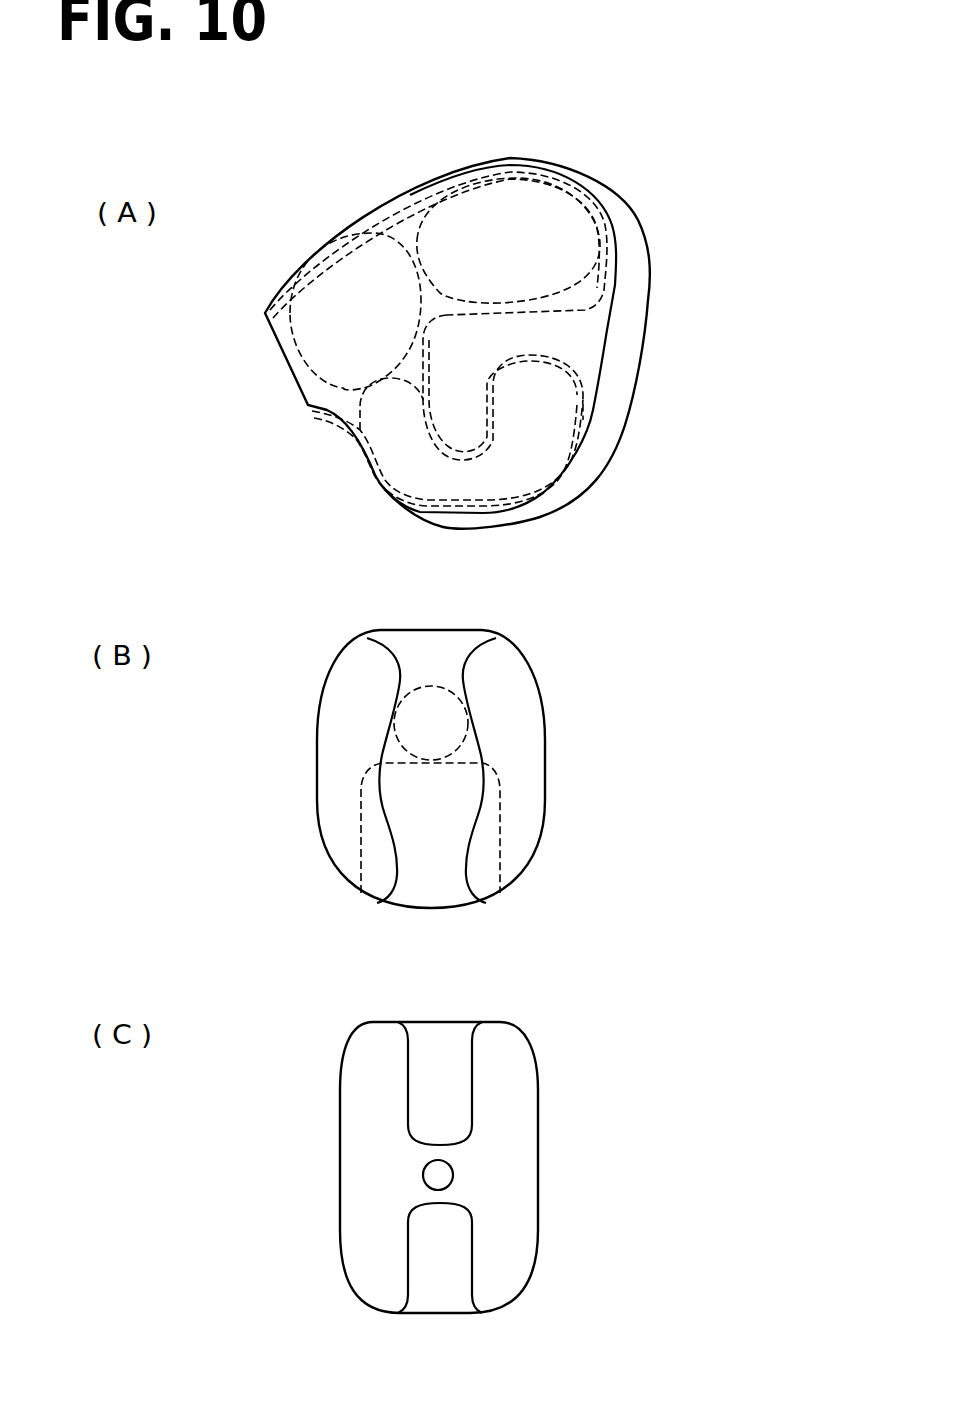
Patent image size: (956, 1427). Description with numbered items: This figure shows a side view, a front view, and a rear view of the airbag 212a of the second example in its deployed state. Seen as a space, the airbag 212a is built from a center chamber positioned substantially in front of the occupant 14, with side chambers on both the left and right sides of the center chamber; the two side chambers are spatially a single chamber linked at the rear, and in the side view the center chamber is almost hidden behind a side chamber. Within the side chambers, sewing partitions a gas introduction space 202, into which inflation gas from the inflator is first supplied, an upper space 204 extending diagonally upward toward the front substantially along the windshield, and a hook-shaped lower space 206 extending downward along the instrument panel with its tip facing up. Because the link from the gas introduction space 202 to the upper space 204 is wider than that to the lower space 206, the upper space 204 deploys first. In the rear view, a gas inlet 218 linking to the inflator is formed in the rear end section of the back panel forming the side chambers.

The airbag 212a is at (643, 140).
The gas introduction space 202 is at (347, 230).
The upper space 204 is at (487, 172).
The lower space 206 is at (578, 413).
The gas inlet 218 is at (453, 1175).
The occupant 14 is at (500, 817).